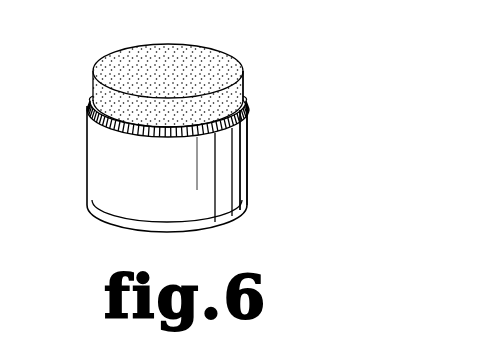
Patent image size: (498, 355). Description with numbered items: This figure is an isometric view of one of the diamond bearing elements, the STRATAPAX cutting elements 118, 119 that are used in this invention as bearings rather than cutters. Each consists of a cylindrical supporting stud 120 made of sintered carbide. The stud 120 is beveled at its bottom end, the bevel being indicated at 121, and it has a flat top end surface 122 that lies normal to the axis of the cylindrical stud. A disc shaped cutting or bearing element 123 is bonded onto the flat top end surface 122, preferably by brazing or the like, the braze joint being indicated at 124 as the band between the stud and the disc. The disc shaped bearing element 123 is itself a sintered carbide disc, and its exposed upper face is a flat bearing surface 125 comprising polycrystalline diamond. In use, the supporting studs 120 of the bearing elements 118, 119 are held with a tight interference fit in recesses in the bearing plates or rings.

The cutting element 118 is at (248, 178).
The cutting element 119 is at (260, 178).
The cylindrical supporting stud 120 is at (107, 170).
The bevel 121 is at (219, 227).
The flat top end surface 122 is at (250, 134).
The disc shaped bearing element 123 is at (243, 100).
The brazing 124 is at (87, 112).
The flat bearing surface 125 is at (138, 62).